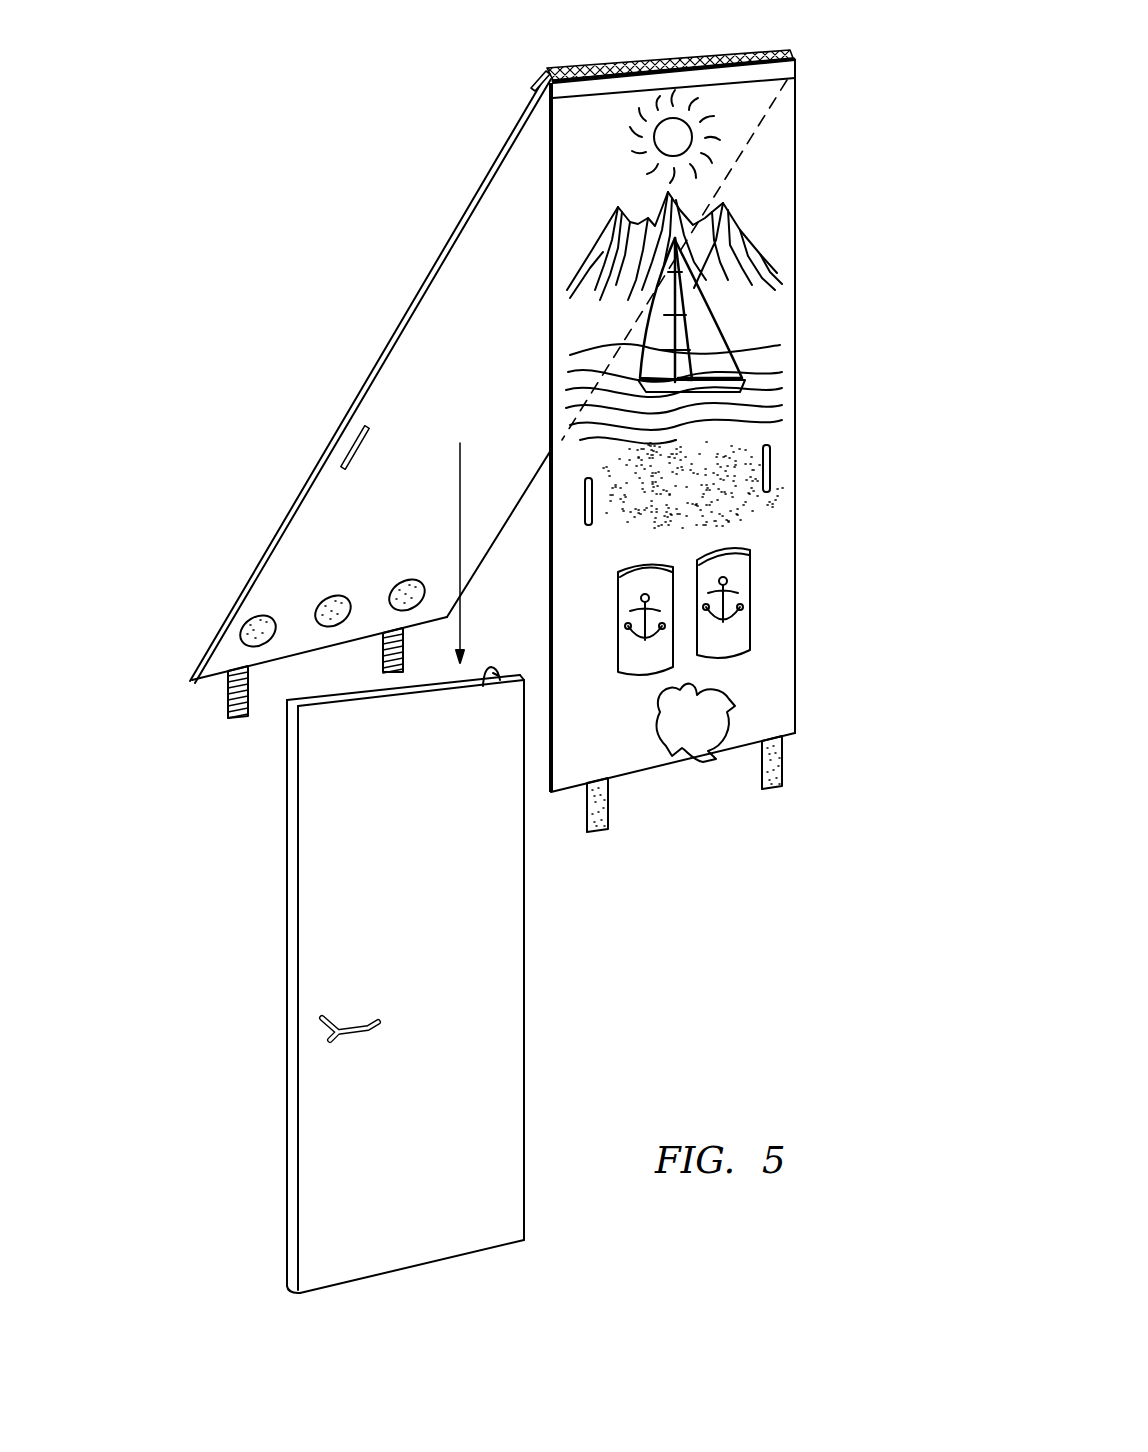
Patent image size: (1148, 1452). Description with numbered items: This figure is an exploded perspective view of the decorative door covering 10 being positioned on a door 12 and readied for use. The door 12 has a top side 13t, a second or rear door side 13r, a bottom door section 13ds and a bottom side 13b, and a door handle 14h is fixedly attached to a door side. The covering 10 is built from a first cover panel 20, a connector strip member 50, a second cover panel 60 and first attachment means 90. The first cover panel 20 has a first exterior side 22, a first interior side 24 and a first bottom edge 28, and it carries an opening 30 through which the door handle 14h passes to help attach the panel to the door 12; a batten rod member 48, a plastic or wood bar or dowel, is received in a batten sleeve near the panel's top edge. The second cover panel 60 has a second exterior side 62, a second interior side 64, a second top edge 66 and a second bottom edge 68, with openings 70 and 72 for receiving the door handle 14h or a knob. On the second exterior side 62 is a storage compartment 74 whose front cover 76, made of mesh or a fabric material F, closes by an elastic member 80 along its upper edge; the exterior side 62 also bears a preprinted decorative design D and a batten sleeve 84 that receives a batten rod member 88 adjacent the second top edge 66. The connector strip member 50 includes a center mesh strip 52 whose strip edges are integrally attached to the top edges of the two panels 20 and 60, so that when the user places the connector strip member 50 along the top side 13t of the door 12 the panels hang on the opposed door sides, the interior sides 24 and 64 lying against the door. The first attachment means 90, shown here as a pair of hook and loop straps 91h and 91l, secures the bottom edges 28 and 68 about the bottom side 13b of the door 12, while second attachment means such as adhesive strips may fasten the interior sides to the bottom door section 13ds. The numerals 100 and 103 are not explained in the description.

The decorative door covering 10 is at (350, 285).
The door 12 is at (518, 1070).
The top side of door 13t is at (483, 686).
The second (rear) door side 13r is at (486, 914).
The bottom door section 13ds is at (310, 1266).
The bottom side of door 13b is at (298, 1293).
The door handle 14h is at (343, 1035).
The first cover panel 20 is at (332, 432).
The first exterior side 22 is at (325, 462).
The first interior side 24 is at (513, 352).
The first bottom edge 28 is at (286, 652).
The opening 30 is at (344, 476).
The batten rod member 48 is at (531, 85).
The connector strip member 50 is at (664, 58).
The center mesh strip 52 is at (732, 50).
The second cover panel 60 is at (803, 328).
The second exterior side 62 is at (720, 340).
The second interior side 64 is at (780, 148).
The second top edge 66 is at (722, 52).
The second bottom edge 68 is at (633, 776).
The opening 70 is at (588, 530).
The opening 72 is at (768, 494).
The storage compartment 74 is at (756, 636).
The front cover 76 is at (712, 652).
The elastic member 80 is at (716, 553).
The batten sleeve 84 is at (570, 100).
The batten rod member 88 is at (549, 105).
The first attachment means 90 is at (210, 708).
The hook strap 91h is at (243, 719).
The loop strap 91l is at (594, 833).
The holes 100 is at (245, 628).
The hole connecting path 103 is at (272, 614).
The preprinted decorative design D is at (668, 485).
The fabric material F is at (636, 670).